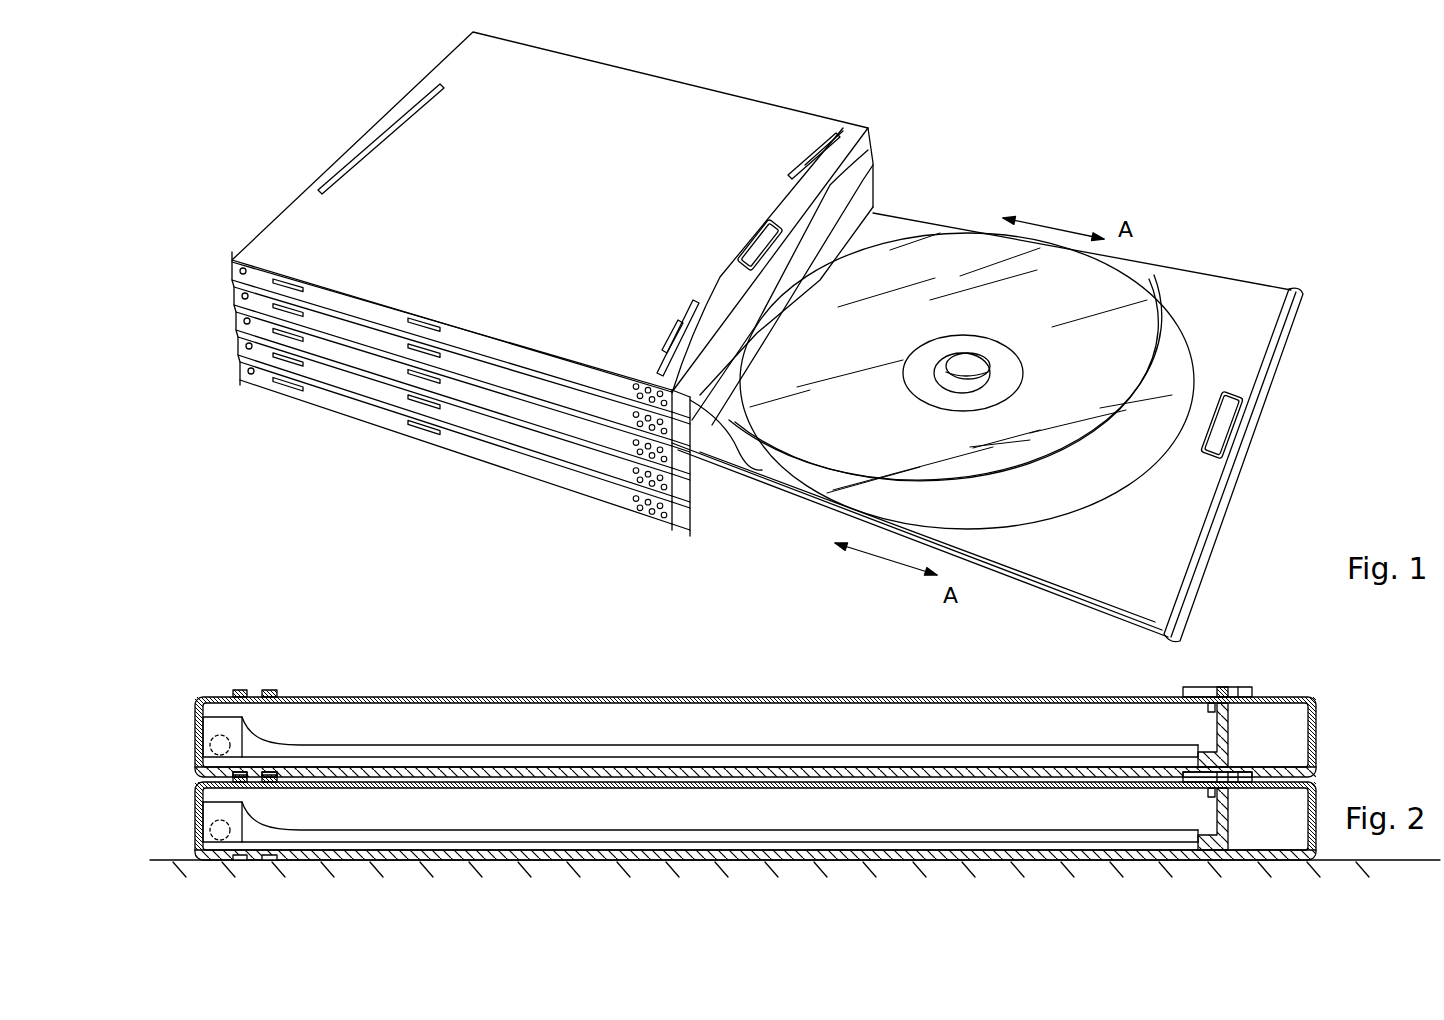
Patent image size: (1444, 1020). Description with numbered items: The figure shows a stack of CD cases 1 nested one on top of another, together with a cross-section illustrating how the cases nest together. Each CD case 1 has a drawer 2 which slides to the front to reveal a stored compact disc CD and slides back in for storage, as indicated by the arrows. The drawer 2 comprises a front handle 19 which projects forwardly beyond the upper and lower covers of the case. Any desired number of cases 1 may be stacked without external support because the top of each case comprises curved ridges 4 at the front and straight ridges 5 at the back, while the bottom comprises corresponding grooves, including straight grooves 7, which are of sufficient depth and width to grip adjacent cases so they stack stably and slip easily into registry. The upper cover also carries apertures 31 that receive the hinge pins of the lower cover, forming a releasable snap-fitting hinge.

In FIG. 1, the CD case 1 is at (318, 167).
In FIG. 2, the CD case 1 is at (182, 818).
In FIG. 1, the drawer 2 is at (1211, 295).
In FIG. 1, the curved ridges 4 is at (817, 140).
In FIG. 2, the curved ridges 4 is at (1225, 687).
In FIG. 1, the straight ridges 5 is at (443, 92).
In FIG. 2, the straight ridges 5 is at (273, 690).
In FIG. 2, the straight grooves 7 is at (273, 768).
In FIG. 1, the front handle 19 is at (1294, 344).
In FIG. 1, the apertures 31 is at (242, 250).
In FIG. 1, the compact disc CD is at (1100, 276).